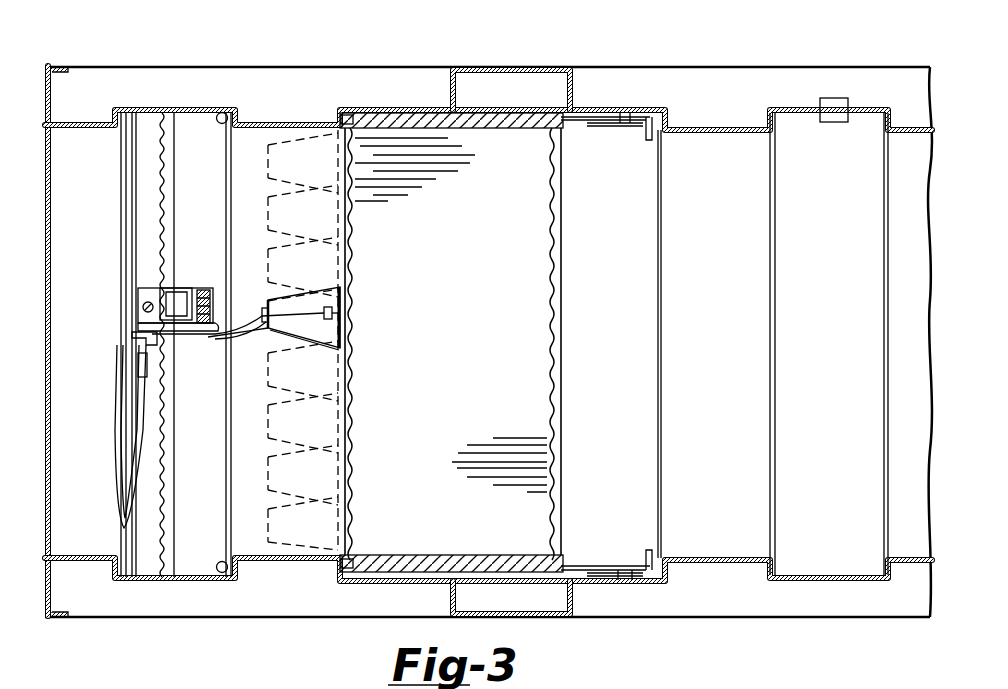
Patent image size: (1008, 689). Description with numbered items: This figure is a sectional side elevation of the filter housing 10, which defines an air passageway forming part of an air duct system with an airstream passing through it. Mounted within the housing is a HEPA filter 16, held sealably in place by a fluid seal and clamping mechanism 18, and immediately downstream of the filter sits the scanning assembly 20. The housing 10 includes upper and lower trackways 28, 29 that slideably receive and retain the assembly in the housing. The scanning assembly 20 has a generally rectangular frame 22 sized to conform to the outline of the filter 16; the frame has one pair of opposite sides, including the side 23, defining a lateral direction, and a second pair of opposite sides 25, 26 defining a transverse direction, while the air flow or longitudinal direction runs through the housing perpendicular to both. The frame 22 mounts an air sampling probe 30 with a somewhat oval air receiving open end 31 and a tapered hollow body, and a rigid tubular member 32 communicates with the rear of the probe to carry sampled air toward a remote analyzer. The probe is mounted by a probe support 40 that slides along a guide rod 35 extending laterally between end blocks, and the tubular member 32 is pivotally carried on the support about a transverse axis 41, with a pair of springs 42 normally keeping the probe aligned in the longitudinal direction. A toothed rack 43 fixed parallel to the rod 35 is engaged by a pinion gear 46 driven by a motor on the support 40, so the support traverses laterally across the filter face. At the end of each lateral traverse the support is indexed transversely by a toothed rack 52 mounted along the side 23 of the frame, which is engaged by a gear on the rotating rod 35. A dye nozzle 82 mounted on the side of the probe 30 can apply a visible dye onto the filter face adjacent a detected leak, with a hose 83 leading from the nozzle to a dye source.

The filter housing 10 is at (393, 68).
The HEPA filter 16 is at (566, 314).
The fluid seal and clamping mechanism 18 is at (613, 130).
The scanning assembly 20 is at (112, 483).
The frame 22 is at (236, 443).
The frame side 23 is at (222, 221).
The frame side 25 is at (148, 118).
The frame side 26 is at (191, 556).
The upper trackway 28 is at (226, 110).
The lower trackway 29 is at (226, 570).
The air sampling probe 30 is at (312, 298).
The open end 31 is at (344, 337).
The rigid tubular member 32 is at (209, 331).
The guide rod 35 is at (143, 305).
The probe support 40 is at (150, 288).
The transverse axis 41 is at (128, 344).
The springs 42 is at (140, 326).
The toothed rack 43 is at (213, 307).
The pinion gear 46 is at (203, 290).
The transverse toothed rack 52 is at (172, 178).
The dye nozzle 82 is at (345, 309).
The hose 83 is at (245, 336).